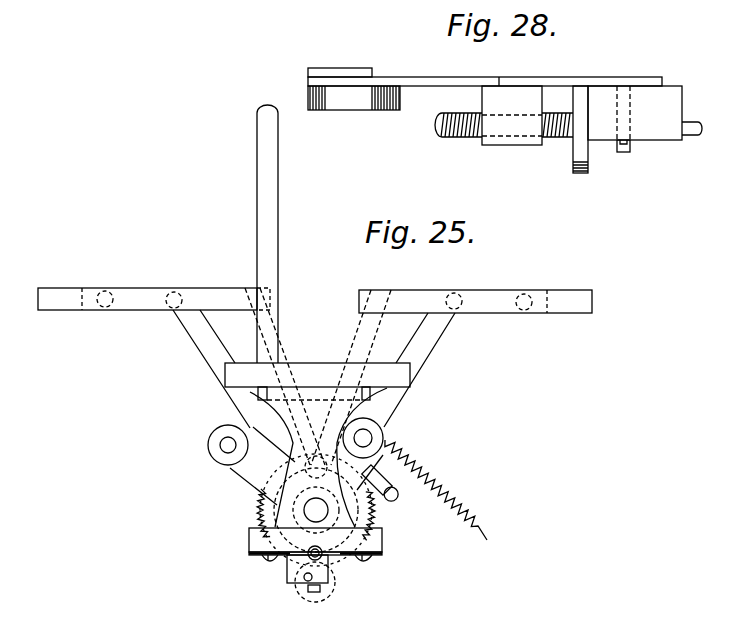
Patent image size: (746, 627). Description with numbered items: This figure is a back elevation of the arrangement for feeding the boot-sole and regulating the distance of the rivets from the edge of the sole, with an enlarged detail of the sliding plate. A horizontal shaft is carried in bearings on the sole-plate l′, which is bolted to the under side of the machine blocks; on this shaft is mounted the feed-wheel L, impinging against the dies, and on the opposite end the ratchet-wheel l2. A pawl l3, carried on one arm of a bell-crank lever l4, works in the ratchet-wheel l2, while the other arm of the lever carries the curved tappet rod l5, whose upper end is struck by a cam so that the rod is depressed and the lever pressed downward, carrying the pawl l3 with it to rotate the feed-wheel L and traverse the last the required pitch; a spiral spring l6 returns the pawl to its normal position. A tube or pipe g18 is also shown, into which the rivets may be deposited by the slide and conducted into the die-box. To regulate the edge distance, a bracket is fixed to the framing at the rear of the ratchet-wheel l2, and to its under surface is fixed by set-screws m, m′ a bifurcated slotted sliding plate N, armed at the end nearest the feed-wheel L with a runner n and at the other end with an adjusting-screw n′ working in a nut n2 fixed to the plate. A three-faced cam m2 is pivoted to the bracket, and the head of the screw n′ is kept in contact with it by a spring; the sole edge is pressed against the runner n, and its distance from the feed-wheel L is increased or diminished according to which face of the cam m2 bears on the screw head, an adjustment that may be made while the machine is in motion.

In FIG. 28, the bifurcated slotted sliding plate N is at (436, 63).
In FIG. 25, the bifurcated slotted sliding plate N is at (383, 558).
In FIG. 28, the runner n is at (354, 98).
In FIG. 28, the adjusting-screw n′ is at (510, 138).
In FIG. 25, the adjusting-screw n′ is at (323, 594).
In FIG. 28, the nut n2 is at (512, 124).
In FIG. 28, the set-screw m is at (645, 119).
In FIG. 25, the set-screw m is at (315, 551).
In FIG. 25, the curved tappet rod l5 is at (278, 192).
In FIG. 25, the sole-plate l′ is at (118, 288).
In FIG. 25, the tube or pipe g18 is at (353, 342).
In FIG. 25, the pawl l3 is at (300, 443).
In FIG. 25, the bell-crank lever l4 is at (383, 438).
In FIG. 25, the spiral spring l6 is at (436, 490).
In FIG. 25, the ratchet-wheel l2 is at (270, 510).
In FIG. 25, the feed-wheel L is at (373, 517).
In FIG. 25, the set-screw m′ is at (346, 561).
In FIG. 25, the cam m2 is at (301, 581).